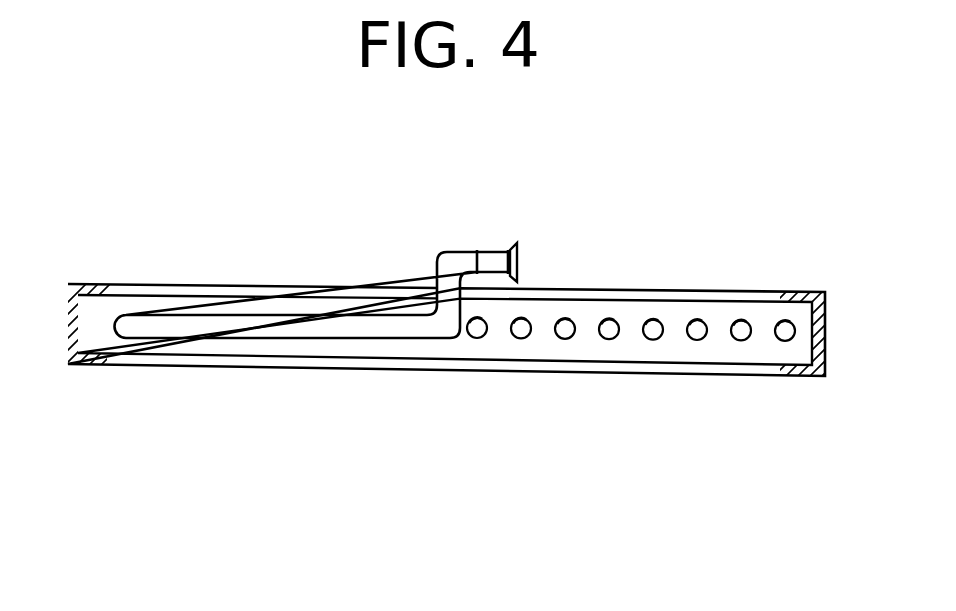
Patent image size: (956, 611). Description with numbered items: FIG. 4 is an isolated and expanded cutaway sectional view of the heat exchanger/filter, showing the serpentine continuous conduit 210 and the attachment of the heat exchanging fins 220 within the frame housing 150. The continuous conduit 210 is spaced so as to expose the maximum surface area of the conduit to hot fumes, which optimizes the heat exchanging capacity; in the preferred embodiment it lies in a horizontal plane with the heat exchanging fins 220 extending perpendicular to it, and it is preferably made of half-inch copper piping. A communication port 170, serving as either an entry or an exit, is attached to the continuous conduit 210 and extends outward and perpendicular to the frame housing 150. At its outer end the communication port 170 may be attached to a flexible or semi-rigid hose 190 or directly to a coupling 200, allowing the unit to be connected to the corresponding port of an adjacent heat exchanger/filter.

The frame housing 150 is at (70, 333).
The communication port 170 is at (453, 252).
The flexible or semi-rigid hose 190 is at (497, 250).
The coupling 200 is at (519, 256).
The continuous conduit 210 is at (745, 320).
The heat exchanging fins 220 is at (627, 343).